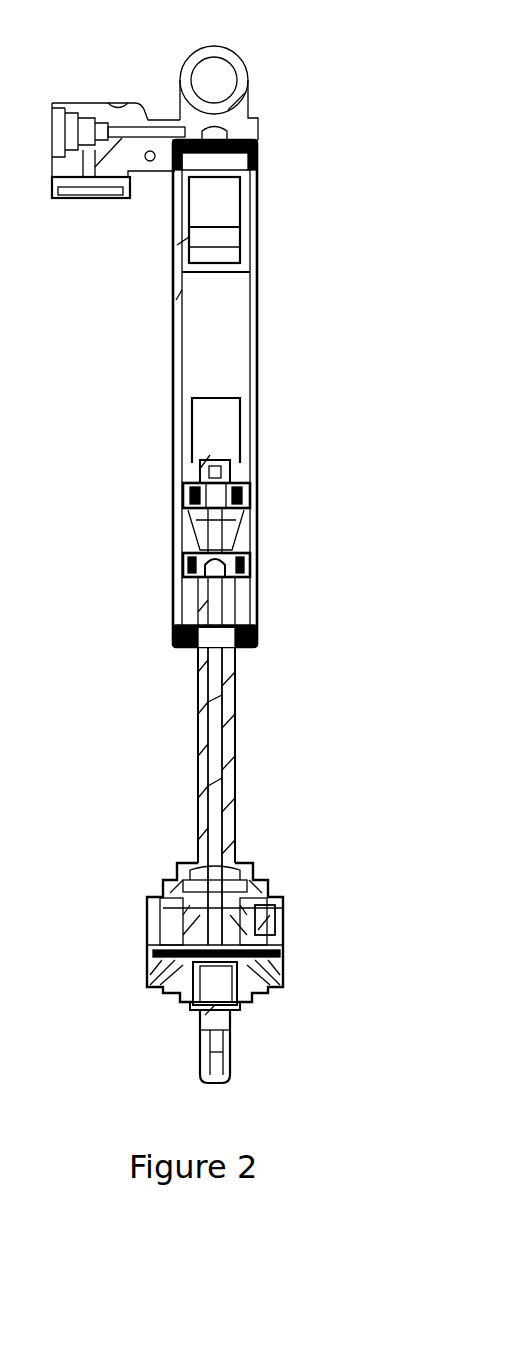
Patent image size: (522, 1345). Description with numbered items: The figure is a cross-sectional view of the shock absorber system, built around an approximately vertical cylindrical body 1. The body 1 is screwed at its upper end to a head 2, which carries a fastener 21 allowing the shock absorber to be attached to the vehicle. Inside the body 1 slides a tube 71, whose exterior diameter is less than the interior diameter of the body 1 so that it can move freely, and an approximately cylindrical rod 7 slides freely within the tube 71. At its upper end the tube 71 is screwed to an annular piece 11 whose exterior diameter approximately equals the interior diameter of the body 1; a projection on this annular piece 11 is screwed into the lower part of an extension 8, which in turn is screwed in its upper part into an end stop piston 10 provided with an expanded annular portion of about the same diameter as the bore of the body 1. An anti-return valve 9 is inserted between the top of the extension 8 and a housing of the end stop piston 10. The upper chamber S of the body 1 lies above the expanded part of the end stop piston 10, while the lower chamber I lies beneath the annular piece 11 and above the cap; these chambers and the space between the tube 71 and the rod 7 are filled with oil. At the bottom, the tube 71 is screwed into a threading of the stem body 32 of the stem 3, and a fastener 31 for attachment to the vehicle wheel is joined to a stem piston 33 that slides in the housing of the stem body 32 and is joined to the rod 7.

The cylindrical body 1 is at (254, 352).
The head 2 is at (122, 87).
The fastener 21 is at (218, 77).
The stem 3 is at (133, 972).
The fastener 31 is at (215, 1060).
The stem body 32 is at (230, 893).
The stem piston 33 is at (275, 918).
The rod 7 is at (232, 803).
The tube 71 is at (233, 738).
The extension 8 is at (220, 512).
The anti-return valve 9 is at (220, 468).
The end stop piston 10 is at (207, 427).
The annular piece 11 is at (247, 567).
The upper chamber S is at (207, 320).
The lower chamber I is at (249, 600).